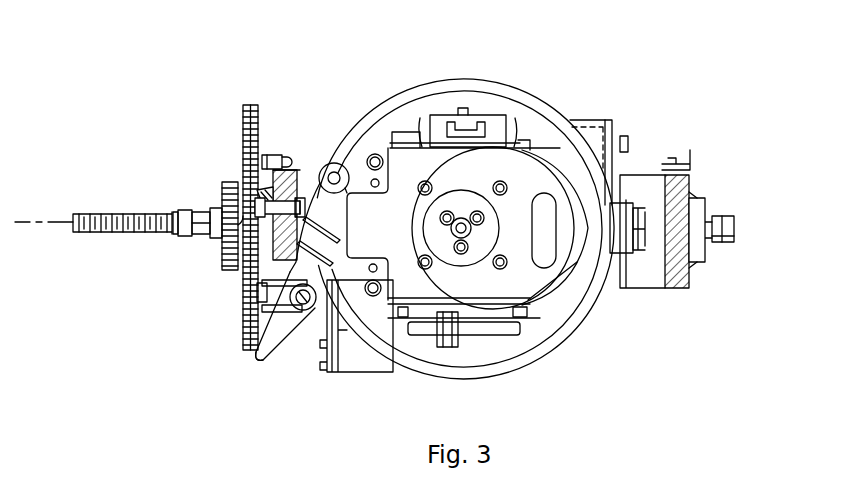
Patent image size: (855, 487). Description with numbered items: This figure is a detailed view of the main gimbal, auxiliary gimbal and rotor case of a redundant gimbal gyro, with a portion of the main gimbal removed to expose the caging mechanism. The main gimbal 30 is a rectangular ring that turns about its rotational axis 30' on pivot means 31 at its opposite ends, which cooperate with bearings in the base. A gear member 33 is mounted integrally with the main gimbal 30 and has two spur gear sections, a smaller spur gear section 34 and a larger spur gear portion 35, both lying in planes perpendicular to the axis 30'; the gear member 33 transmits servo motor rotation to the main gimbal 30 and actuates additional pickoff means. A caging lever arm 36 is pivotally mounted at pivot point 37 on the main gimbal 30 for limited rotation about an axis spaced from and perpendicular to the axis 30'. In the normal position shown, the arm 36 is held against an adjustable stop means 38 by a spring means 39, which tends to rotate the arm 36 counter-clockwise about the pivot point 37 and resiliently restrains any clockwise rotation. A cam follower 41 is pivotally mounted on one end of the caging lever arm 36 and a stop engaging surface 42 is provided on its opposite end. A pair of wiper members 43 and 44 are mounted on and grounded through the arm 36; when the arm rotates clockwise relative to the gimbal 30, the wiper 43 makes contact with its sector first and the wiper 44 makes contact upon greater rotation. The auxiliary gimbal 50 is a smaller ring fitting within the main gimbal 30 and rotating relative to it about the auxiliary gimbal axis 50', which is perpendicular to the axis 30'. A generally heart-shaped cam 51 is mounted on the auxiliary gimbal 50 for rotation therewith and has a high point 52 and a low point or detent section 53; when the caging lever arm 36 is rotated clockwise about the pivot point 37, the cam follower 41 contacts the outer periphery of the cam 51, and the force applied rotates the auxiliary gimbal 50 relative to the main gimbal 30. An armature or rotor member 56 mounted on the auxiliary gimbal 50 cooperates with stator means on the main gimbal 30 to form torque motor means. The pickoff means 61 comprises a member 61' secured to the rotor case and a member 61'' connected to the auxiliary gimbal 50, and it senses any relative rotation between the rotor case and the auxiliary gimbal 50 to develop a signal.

The main gimbal 30 is at (481, 228).
The main gimbal rotational axis 30' is at (93, 214).
The pivot means 31 is at (205, 240).
The gear member 33 is at (236, 163).
The spur gear section 34 is at (231, 271).
The spur gear portion 35 is at (251, 105).
The caging lever arm 36 is at (275, 340).
The pivot point 37 is at (306, 310).
The adjustable stop means 38 is at (272, 216).
The spring means 39 is at (280, 312).
The cam follower 41 is at (330, 165).
The stop engaging surface 42 is at (260, 361).
The wiper member 43 is at (331, 268).
The wiper member 44 is at (340, 233).
The auxiliary gimbal 50 is at (373, 224).
The auxiliary gimbal axis 50' is at (461, 217).
The cam 51 is at (516, 281).
The high point 52 is at (586, 231).
The low point or detent section 53 is at (418, 218).
The armature or rotor member 56 is at (570, 312).
The pickoff means 61 is at (501, 141).
The pickoff member 61' is at (613, 146).
The pickoff member 61'' is at (638, 134).